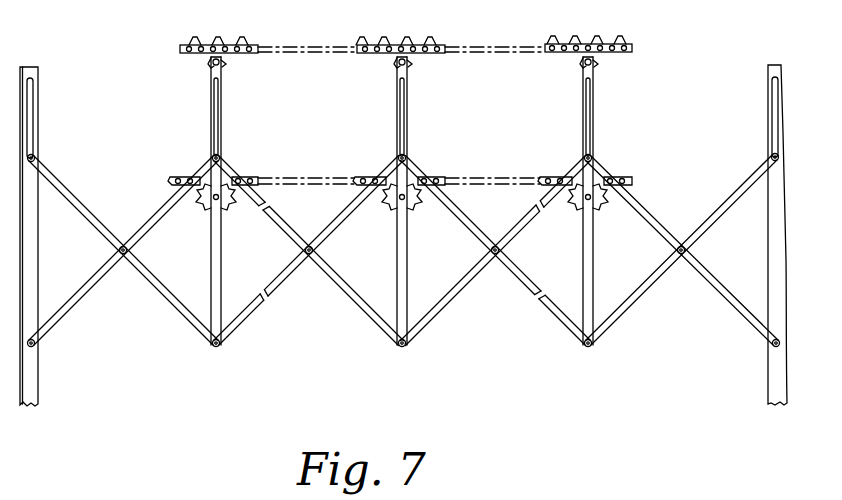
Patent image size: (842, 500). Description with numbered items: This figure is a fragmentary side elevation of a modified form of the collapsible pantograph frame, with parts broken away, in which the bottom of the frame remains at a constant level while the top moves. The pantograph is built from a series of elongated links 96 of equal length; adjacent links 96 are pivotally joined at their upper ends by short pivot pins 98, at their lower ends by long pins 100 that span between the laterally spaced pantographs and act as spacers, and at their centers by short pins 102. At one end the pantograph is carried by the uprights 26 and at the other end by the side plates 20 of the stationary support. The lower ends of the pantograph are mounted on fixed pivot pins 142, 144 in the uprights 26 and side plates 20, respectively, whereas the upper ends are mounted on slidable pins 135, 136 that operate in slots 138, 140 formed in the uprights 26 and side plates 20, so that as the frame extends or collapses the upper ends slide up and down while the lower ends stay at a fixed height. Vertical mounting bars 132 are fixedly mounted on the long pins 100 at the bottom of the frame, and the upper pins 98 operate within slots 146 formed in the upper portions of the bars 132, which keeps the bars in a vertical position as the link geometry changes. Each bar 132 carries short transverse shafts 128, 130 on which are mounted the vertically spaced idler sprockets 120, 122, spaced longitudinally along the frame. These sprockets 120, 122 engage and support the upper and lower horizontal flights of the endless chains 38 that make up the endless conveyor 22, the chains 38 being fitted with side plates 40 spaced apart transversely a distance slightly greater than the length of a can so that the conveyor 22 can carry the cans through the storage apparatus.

The side plates 20 is at (769, 236).
The endless conveyor 22 is at (442, 46).
The uprights 26 is at (31, 257).
The endless chains 38 is at (629, 44).
The side plates 40 is at (578, 43).
The elongated links 96 is at (147, 275).
The short pivot pins 98 is at (220, 158).
The long pins 100 is at (221, 343).
The short pins 102 is at (123, 246).
The idler sprockets 120 is at (223, 65).
The idler sprockets 122 is at (226, 200).
The short transverse shaft 128 is at (210, 63).
The short transverse shaft 130 is at (206, 191).
The vertical mounting bars 132 is at (405, 265).
The slidable pin 135 is at (35, 158).
The slidable pin 136 is at (771, 157).
The slot 138 is at (37, 118).
The slot 140 is at (768, 94).
The fixed pivot pin 142 is at (36, 344).
The fixed pivot pin 144 is at (773, 344).
The slots 146 is at (221, 106).